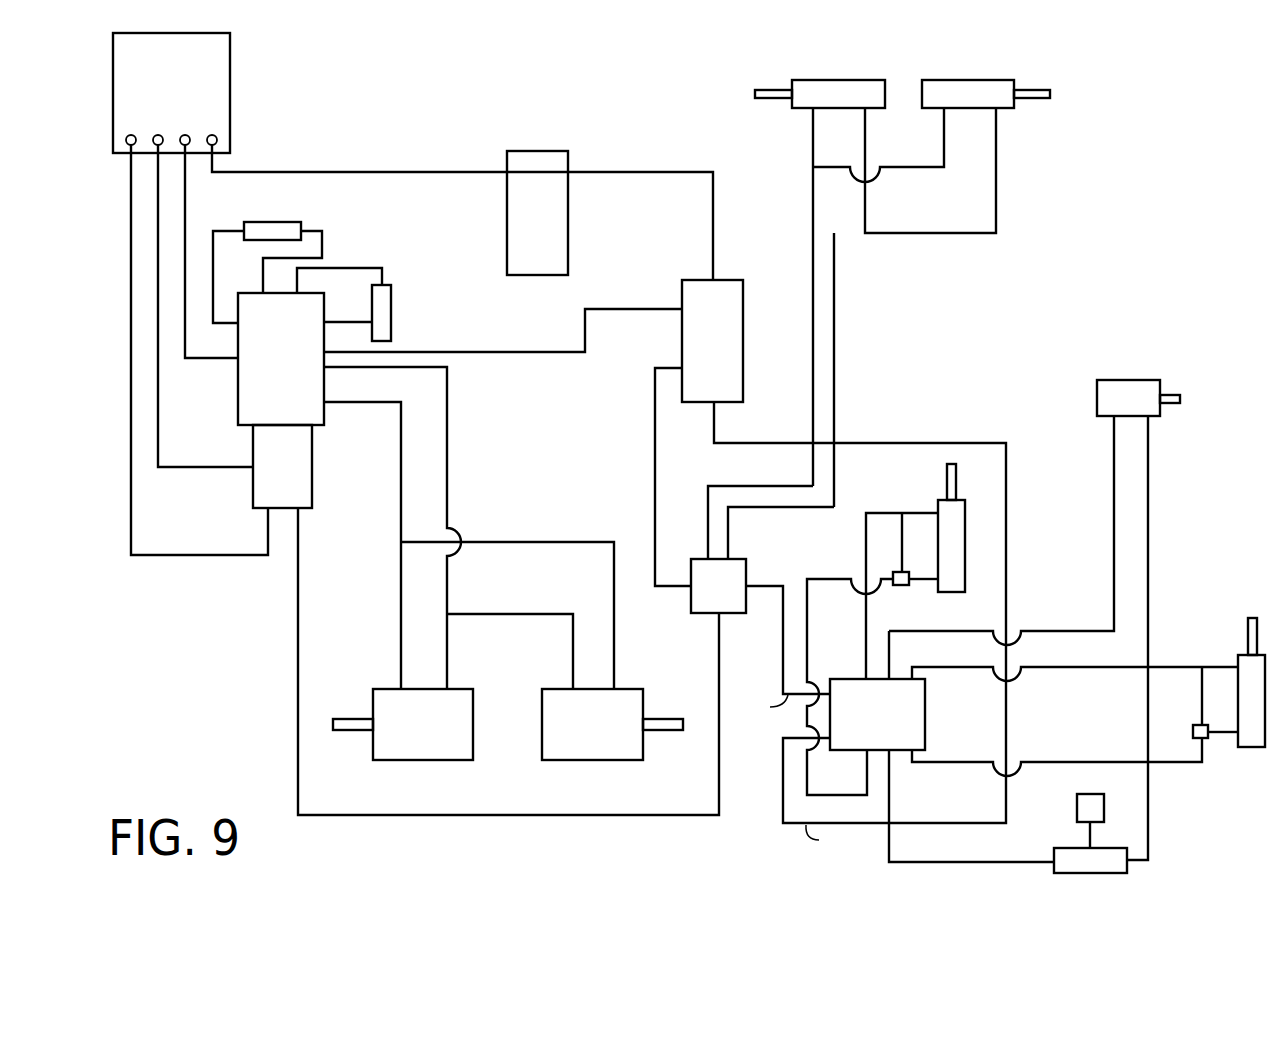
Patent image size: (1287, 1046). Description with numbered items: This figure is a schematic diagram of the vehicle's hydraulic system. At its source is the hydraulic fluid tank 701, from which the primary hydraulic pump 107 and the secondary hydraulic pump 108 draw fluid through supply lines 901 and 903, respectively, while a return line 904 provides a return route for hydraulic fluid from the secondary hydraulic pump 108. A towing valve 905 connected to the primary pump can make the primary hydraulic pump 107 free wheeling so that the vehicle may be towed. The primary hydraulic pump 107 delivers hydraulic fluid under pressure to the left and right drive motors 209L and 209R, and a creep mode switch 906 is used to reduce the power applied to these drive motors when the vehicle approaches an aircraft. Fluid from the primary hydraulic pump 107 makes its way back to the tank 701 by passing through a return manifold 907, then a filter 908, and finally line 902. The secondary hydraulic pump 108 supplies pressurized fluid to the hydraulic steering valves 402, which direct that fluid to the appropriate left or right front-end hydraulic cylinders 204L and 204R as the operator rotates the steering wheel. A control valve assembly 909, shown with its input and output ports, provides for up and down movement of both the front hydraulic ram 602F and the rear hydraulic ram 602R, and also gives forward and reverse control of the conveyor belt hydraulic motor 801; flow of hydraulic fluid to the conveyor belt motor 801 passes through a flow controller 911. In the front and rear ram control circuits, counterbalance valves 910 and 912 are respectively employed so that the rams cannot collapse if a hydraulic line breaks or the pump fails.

The hydraulic fluid tank 701 is at (190, 112).
The primary hydraulic pump 107 is at (302, 369).
The secondary hydraulic pump 108 is at (303, 482).
The left front-end hydraulic cylinder 204L is at (840, 90).
The right front-end hydraulic cylinder 204R is at (965, 90).
The left drive motor 209L is at (451, 736).
The right drive motor 209R is at (623, 736).
The hydraulic steering valves 402 is at (739, 599).
The front hydraulic ram 602F is at (945, 515).
The rear hydraulic ram 602R is at (1246, 672).
The conveyor belt hydraulic motor 801 is at (1149, 409).
The supply line 901 is at (226, 365).
The line 902 is at (368, 172).
The supply line 903 is at (226, 472).
The return line 904 is at (132, 486).
The towing valve 905 is at (274, 222).
The creep mode switch 906 is at (384, 311).
The return manifold 907 is at (736, 353).
The filter 908 is at (560, 228).
The control valve assembly 909 is at (918, 714).
The counterbalance valve 910 is at (899, 588).
The flow controller 911 is at (1088, 876).
The counterbalance valve 912 is at (1203, 742).